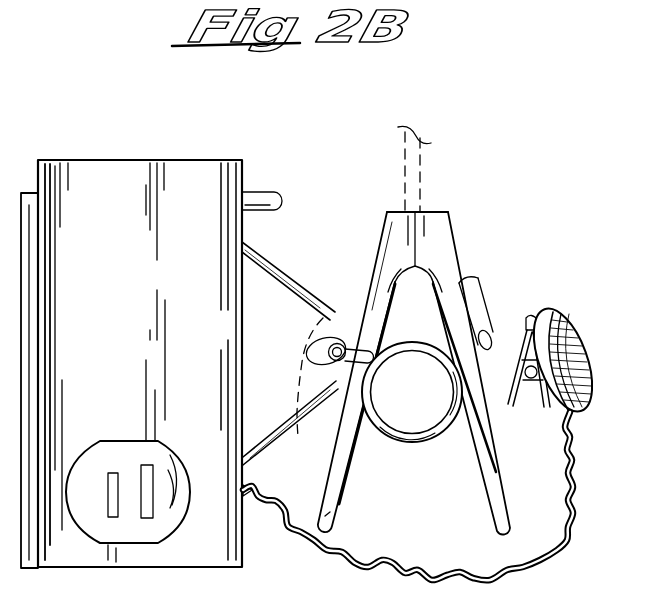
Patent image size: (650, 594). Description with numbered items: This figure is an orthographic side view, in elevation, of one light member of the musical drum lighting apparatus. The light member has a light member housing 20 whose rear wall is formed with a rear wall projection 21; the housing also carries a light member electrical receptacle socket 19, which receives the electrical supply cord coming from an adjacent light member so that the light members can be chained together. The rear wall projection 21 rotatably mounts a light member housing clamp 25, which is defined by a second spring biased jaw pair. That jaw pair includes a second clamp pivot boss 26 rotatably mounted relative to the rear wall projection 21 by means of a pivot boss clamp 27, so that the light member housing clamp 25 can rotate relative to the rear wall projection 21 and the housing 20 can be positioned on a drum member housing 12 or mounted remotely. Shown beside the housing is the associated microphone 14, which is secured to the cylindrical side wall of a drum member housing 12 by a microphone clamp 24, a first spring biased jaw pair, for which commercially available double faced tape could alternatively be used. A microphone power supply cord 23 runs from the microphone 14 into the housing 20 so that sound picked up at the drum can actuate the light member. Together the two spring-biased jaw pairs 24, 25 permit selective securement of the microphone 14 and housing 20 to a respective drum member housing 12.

The drum member housing 12 is at (432, 168).
The microphone 14 is at (556, 306).
The light member electrical receptacle socket 19 is at (160, 442).
The light member housing 20 is at (243, 160).
The rear wall projection 21 is at (287, 270).
The microphone power supply cord 23 is at (577, 462).
The microphone clamp 24 is at (527, 318).
The light member housing clamp 25 is at (450, 243).
The second clamp pivot boss 26 is at (298, 437).
The pivot boss clamp 27 is at (338, 330).